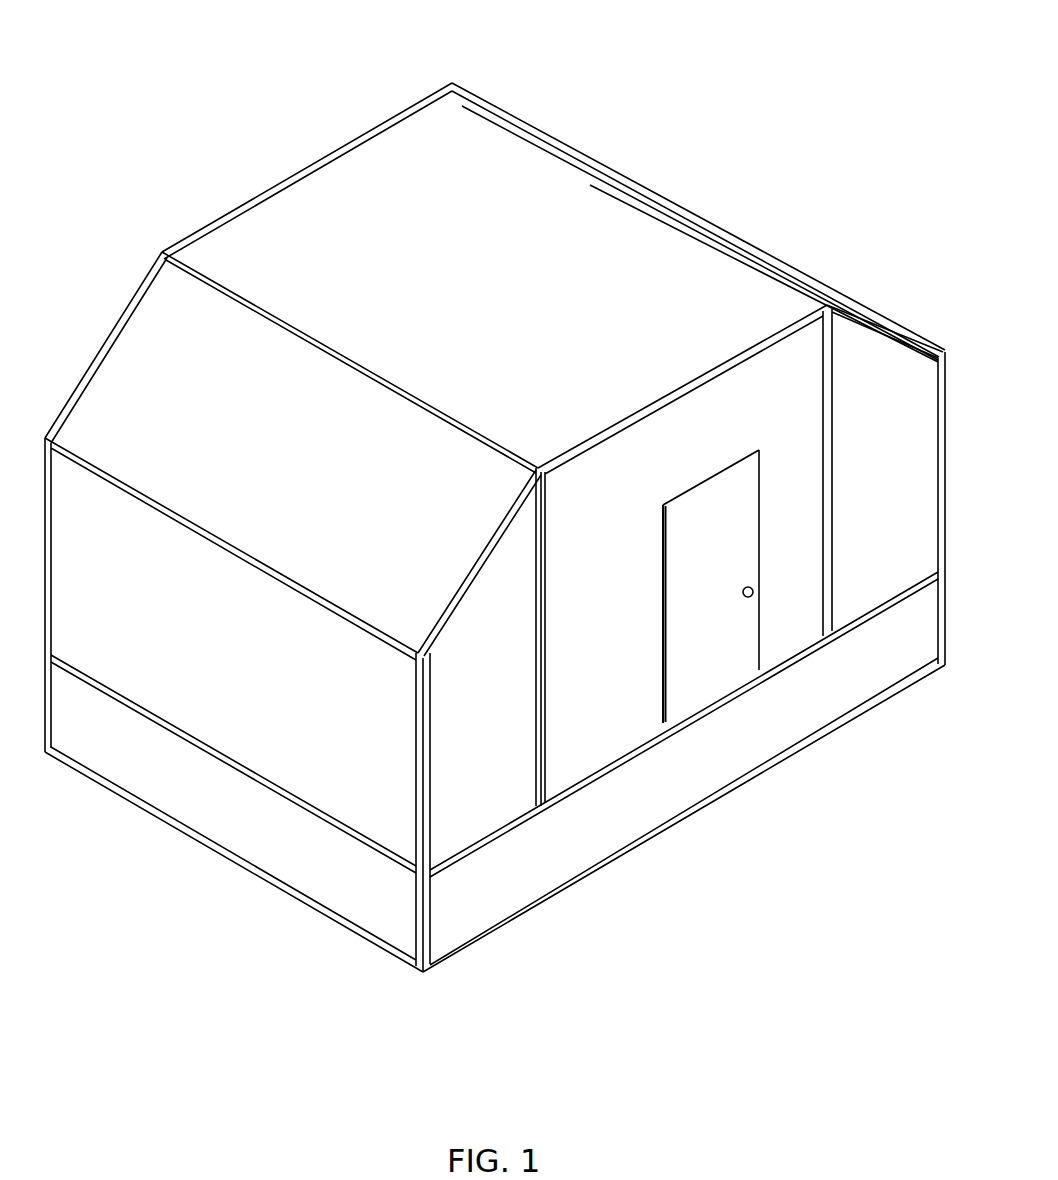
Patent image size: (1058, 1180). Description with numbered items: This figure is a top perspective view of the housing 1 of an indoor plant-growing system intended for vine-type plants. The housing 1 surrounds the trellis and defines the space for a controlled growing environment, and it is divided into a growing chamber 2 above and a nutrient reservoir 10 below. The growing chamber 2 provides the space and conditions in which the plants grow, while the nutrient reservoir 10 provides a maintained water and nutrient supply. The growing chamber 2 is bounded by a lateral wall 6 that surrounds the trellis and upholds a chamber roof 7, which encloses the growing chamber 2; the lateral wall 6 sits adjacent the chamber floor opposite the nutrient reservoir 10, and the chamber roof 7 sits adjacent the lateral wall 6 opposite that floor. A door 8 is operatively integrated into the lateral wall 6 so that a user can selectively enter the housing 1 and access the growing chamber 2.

The housing 1 is at (541, 108).
The growing chamber 2 is at (910, 327).
The lateral wall 6 is at (935, 388).
The chamber roof 7 is at (783, 268).
The door 8 is at (760, 457).
The nutrient reservoir 10 is at (920, 695).